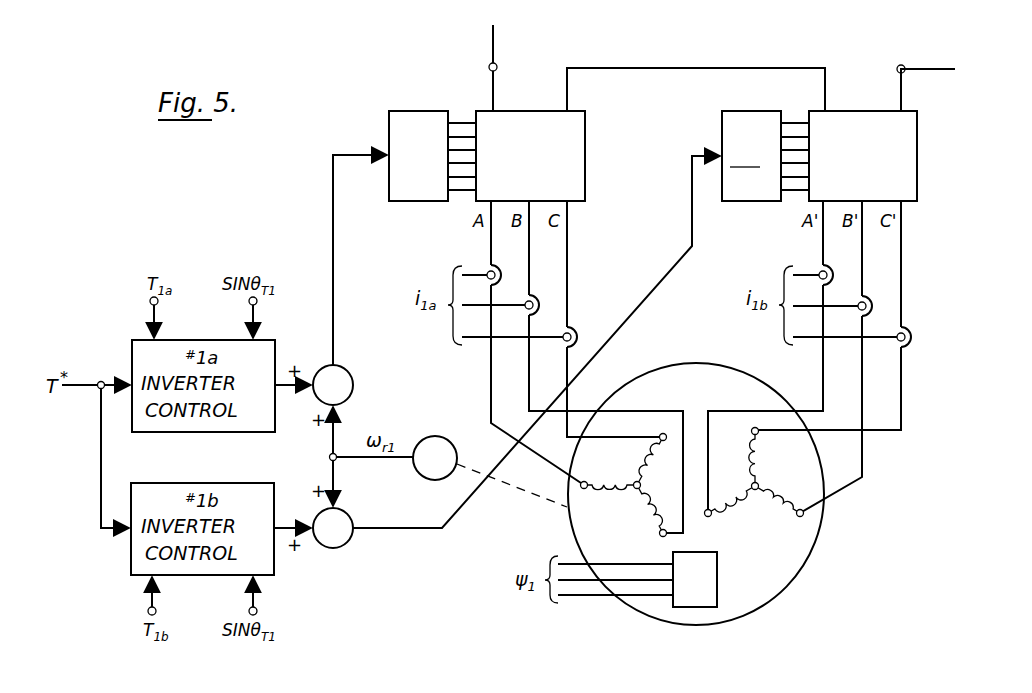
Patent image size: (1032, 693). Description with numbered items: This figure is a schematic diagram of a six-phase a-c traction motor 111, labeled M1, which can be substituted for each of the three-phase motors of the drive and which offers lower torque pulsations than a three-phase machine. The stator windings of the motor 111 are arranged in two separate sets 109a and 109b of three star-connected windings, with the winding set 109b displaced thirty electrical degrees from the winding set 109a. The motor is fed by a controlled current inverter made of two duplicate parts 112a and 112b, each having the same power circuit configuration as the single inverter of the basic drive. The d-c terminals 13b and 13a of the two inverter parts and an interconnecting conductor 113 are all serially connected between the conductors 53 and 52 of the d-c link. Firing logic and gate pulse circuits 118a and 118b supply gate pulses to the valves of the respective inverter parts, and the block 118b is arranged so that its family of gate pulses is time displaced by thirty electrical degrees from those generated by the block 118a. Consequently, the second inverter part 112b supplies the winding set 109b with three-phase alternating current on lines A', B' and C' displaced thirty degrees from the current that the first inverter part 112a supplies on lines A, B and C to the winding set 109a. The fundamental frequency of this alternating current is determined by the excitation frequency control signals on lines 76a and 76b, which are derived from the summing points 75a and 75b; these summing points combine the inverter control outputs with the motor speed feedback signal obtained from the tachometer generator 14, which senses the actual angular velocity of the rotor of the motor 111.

The d-c link conductor 53 is at (493, 38).
The d-c terminal 13b is at (497, 65).
The firing logic and gate pulse circuit 118a is at (418, 111).
The inverter part INV. #1a 112a is at (585, 148).
The interconnecting conductor 113 is at (700, 68).
The firing logic and gate pulse circuit 118b is at (748, 111).
The inverter part INV. #1b 112b is at (917, 192).
The d-c terminal 13a is at (897, 67).
The d-c link conductor 52 is at (930, 69).
The excitation frequency control signal line 76a is at (333, 243).
The excitation frequency control signal line 76b is at (678, 262).
The summing point 75a is at (349, 373).
The summing point 75b is at (347, 542).
The tachometer generator 14 is at (440, 436).
The first star-connected stator winding set 109a is at (636, 539).
The second star-connected stator winding set 109b is at (779, 539).
The 6-phase a-c traction motor 111 is at (797, 572).
The motor M1 is at (690, 384).